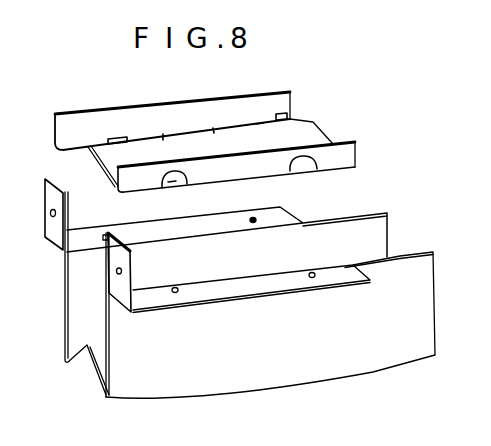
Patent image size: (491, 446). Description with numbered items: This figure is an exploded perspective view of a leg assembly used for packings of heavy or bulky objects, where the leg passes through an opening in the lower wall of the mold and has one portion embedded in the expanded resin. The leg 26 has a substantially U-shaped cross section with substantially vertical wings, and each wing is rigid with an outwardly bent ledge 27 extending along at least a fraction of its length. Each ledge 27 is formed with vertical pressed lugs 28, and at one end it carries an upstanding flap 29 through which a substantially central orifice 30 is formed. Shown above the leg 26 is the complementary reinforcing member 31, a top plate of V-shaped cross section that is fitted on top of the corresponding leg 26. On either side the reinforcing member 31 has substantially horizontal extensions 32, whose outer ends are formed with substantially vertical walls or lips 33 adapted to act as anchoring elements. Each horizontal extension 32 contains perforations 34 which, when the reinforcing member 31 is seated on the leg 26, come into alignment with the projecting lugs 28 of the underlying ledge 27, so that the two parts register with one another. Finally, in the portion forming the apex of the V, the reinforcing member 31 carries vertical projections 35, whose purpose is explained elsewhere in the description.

The leg 26 is at (239, 288).
The ledge 27 is at (242, 287).
The pressed lug 28 is at (175, 289).
The upstanding flap 29 is at (84, 269).
The orifice 30 is at (115, 271).
The reinforcing member 31 is at (238, 122).
The horizontal extension 32 is at (115, 186).
The vertical wall 33 is at (356, 157).
The perforation 34 is at (313, 165).
The vertical projection 35 is at (165, 140).